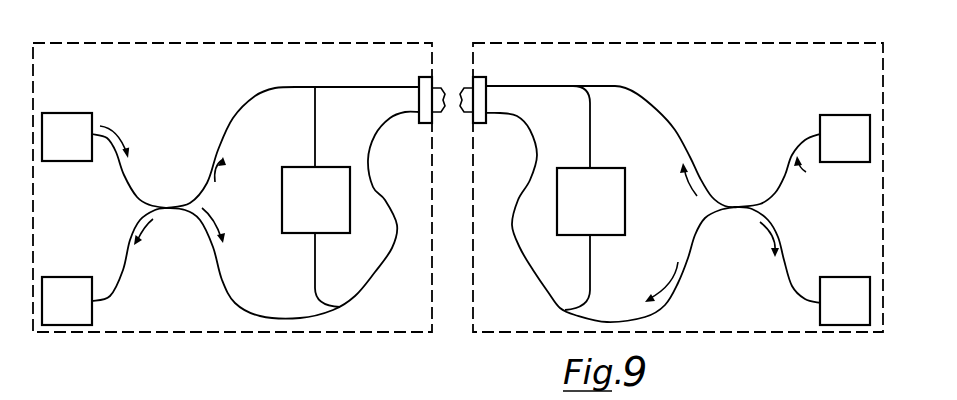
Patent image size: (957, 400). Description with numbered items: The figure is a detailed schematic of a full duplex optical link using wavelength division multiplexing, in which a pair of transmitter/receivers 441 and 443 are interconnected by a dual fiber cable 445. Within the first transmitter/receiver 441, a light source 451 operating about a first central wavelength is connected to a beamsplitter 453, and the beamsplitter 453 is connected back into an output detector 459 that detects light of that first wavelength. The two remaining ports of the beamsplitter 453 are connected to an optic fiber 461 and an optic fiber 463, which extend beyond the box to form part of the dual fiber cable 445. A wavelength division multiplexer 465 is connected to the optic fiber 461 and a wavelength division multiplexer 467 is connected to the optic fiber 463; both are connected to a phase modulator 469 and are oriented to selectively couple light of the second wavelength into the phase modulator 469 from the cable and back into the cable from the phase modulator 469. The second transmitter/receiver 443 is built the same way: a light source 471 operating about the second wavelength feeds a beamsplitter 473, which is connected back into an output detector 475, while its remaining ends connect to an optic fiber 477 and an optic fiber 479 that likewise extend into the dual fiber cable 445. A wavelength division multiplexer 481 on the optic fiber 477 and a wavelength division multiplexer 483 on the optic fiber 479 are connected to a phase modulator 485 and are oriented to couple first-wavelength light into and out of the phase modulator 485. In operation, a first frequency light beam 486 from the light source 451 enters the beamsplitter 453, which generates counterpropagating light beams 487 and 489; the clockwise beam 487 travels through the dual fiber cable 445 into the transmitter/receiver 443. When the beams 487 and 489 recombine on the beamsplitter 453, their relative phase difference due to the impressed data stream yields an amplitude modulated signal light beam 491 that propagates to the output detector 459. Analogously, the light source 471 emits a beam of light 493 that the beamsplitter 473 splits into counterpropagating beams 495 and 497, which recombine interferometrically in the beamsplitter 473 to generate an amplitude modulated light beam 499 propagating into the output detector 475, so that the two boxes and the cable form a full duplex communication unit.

The transmitter/receiver 441 is at (182, 42).
The transmitter/receiver 443 is at (702, 42).
The dual fiber cable 445 is at (455, 88).
The light source 451 is at (91, 113).
The beamsplitter 453 is at (167, 206).
The output detector 459 is at (97, 277).
The optic fiber 461 is at (255, 300).
The optic fiber 463 is at (263, 95).
The wavelength division multiplexer 465 is at (342, 306).
The wavelength division multiplexer 467 is at (330, 90).
The phase modulator 469 is at (356, 206).
The light source 471 is at (820, 118).
The beamsplitter 473 is at (738, 205).
The output detector 475 is at (820, 278).
The optic fiber 477 is at (668, 298).
The optic fiber 479 is at (674, 116).
The wavelength division multiplexer 481 is at (558, 308).
The wavelength division multiplexer 483 is at (576, 89).
The phase modulator 485 is at (552, 193).
The first frequency light beam 486 is at (123, 135).
The clockwise propagating first frequency light beam 487 is at (223, 180).
The counterclockwise propagating first frequency light beam 489 is at (217, 217).
The amplitude modulated signal light beam 491 is at (152, 222).
The beam of light 493 is at (808, 172).
The counterpropagating second frequency beam of light 495 is at (695, 196).
The counterpropagating second frequency beam of light 497 is at (657, 290).
The amplitude modulated light beam 499 is at (765, 243).